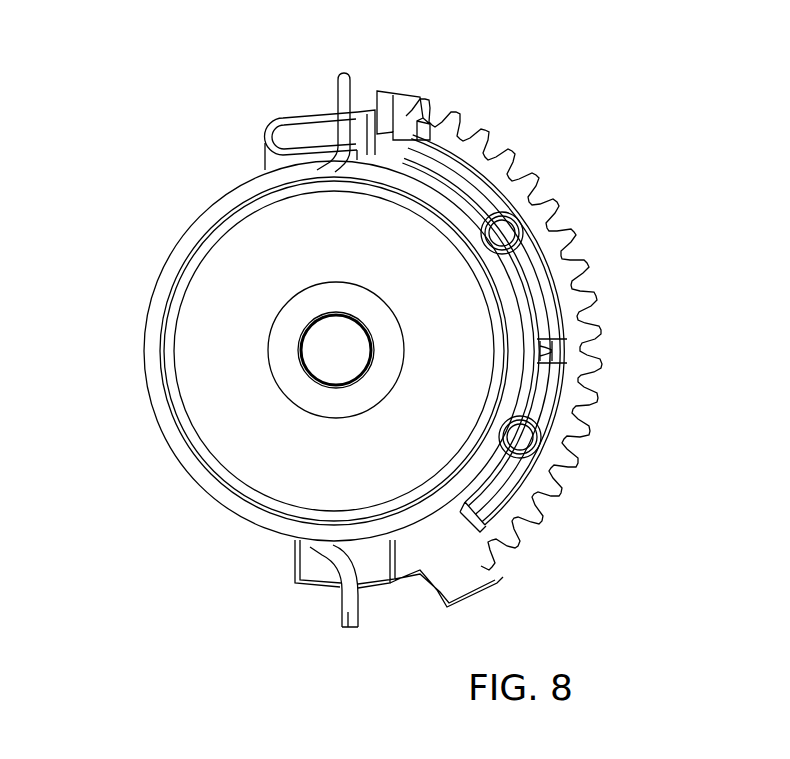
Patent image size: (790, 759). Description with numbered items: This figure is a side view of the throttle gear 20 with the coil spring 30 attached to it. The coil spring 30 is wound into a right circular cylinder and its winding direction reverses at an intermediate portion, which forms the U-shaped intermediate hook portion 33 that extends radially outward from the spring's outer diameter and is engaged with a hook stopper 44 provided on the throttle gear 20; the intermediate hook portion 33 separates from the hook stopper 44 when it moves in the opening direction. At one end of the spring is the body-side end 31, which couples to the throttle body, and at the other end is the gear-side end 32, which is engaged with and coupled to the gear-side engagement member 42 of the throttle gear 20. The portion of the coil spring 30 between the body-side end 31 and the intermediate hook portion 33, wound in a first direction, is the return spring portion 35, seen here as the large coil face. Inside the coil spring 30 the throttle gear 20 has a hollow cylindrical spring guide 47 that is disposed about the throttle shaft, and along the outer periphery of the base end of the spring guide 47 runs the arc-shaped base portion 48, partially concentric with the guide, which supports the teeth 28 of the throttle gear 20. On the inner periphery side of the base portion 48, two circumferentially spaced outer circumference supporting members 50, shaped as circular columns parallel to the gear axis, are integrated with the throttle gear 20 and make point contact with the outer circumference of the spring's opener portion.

The throttle gear 20 is at (375, 563).
The teeth 28 is at (483, 125).
The coil spring 30 is at (237, 497).
The body-side end 31 is at (348, 613).
The gear-side end 32 is at (390, 107).
The intermediate hook portion 33 is at (331, 142).
The return spring portion 35 is at (165, 283).
The gear-side engagement member 42 is at (417, 115).
The hook stopper 44 is at (280, 137).
The spring guide 47 is at (205, 388).
The base portion 48 is at (545, 232).
The outer circumference supporting members 50 is at (502, 233).